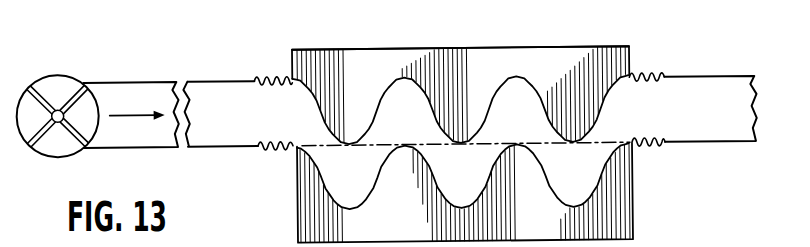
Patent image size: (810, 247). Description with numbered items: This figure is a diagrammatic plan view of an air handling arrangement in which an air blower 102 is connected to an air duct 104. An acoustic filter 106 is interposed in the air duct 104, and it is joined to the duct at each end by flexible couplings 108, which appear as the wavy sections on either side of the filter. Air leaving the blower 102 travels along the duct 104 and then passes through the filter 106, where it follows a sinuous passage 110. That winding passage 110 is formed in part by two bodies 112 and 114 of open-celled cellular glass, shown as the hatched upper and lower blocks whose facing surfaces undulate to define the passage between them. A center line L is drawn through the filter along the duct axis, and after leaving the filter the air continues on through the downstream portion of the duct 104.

The air blower 102 is at (68, 73).
The air duct 104 is at (153, 79).
The acoustic filter 106 is at (491, 44).
The flexible couplings 108 is at (275, 148).
The sinuous passage 110 is at (332, 176).
The body of open-celled cellular glass 112 is at (368, 47).
The body of open-celled cellular glass 114 is at (632, 222).
The center line L is at (493, 142).